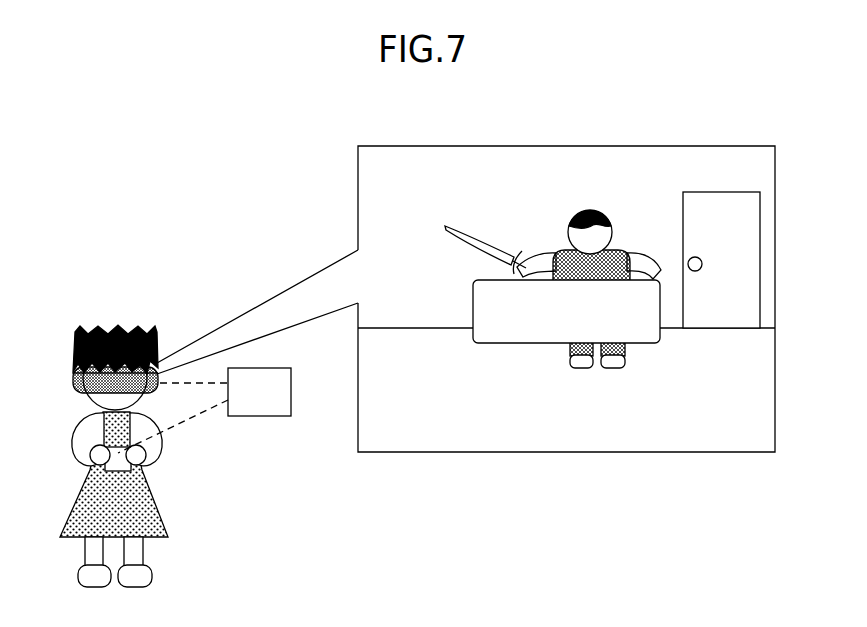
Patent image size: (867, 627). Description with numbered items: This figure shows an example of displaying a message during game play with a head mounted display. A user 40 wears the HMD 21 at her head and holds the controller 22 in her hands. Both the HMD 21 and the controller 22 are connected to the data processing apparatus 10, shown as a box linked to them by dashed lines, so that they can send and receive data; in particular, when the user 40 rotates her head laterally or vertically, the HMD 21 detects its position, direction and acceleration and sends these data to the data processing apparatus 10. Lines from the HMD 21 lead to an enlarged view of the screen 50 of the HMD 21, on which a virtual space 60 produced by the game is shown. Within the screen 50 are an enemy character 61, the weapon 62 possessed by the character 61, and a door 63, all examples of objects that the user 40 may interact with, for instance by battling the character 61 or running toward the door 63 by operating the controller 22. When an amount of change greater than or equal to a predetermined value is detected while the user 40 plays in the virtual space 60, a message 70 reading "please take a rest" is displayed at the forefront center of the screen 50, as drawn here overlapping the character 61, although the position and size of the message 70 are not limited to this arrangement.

The data processing apparatus 10 is at (258, 368).
The HMD 21 is at (74, 380).
The controller 22 is at (115, 470).
The user 40 is at (93, 434).
The screen 50 is at (673, 146).
The virtual space 60 is at (750, 170).
The enemy character 61 is at (625, 252).
The weapon 62 is at (478, 238).
The door 63 is at (750, 262).
The message 70 is at (528, 343).